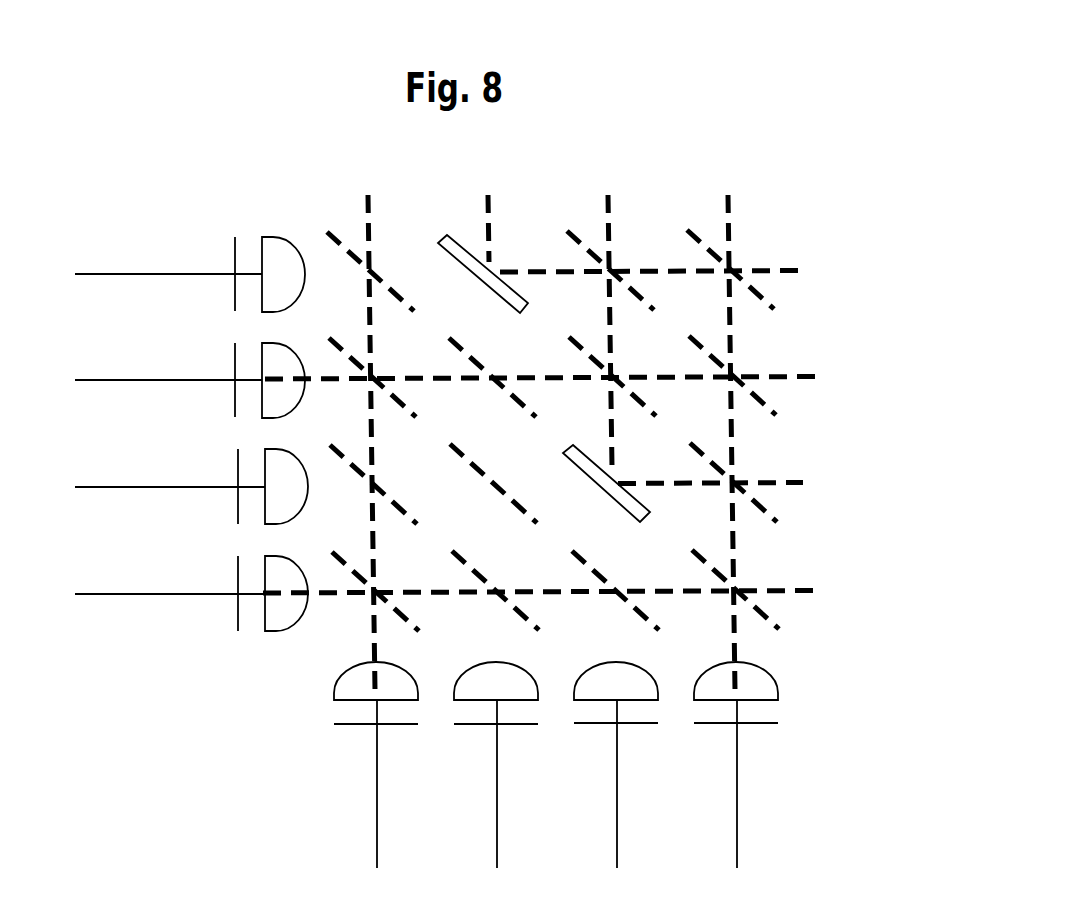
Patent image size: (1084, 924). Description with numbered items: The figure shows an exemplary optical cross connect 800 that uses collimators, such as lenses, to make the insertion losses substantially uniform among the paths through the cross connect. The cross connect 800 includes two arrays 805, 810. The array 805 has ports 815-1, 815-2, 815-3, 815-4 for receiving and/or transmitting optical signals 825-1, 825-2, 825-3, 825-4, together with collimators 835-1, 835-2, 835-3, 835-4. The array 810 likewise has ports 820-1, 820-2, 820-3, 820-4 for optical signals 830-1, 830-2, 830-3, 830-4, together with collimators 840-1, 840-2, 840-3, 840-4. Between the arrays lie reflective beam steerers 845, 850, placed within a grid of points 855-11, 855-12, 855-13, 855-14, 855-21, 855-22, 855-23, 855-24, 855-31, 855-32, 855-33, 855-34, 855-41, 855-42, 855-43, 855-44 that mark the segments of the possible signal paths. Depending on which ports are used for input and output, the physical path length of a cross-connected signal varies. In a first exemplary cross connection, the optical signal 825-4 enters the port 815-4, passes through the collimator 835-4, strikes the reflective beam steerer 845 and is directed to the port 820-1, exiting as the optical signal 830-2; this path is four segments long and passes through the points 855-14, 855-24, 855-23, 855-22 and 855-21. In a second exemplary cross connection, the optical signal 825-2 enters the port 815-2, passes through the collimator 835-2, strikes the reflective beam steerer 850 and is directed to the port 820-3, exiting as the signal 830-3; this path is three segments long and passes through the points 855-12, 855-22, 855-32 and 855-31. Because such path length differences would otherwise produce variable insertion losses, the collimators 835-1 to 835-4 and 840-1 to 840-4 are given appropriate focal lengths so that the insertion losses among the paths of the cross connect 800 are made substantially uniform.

The cross connect 800 is at (724, 95).
The array 805 is at (273, 192).
The array 810 is at (802, 688).
The port 815-1 is at (236, 563).
The port 815-2 is at (236, 456).
The port 815-3 is at (233, 346).
The port 815-4 is at (233, 243).
The optical signal 825-1 is at (93, 593).
The optical signal 825-2 is at (93, 486).
The optical signal 825-3 is at (93, 379).
The optical signal 825-4 is at (93, 273).
The collimator 835-1 is at (303, 576).
The collimator 835-2 is at (303, 469).
The collimator 835-3 is at (303, 361).
The collimator 835-4 is at (303, 252).
The collimator 840-1 is at (400, 668).
The collimator 840-2 is at (523, 668).
The collimator 840-3 is at (643, 668).
The collimator 840-4 is at (763, 668).
The port 820-1 is at (357, 727).
The port 820-2 is at (475, 727).
The port 820-3 is at (597, 727).
The port 820-4 is at (718, 728).
The optical signal 830-1 is at (375, 847).
The optical signal 830-2 is at (496, 847).
The optical signal 830-3 is at (616, 848).
The optical signal 830-4 is at (736, 848).
The reflective beam steerer 845 is at (480, 284).
The reflective beam steerer 850 is at (613, 498).
The point 855-11 is at (418, 574).
The point 855-12 is at (418, 467).
The point 855-13 is at (419, 359).
The point 855-14 is at (418, 243).
The point 855-21 is at (531, 574).
The point 855-22 is at (531, 467).
The point 855-23 is at (533, 359).
The point 855-24 is at (533, 249).
The point 855-31 is at (659, 574).
The point 855-32 is at (658, 468).
The point 855-33 is at (659, 359).
The point 855-34 is at (656, 249).
The point 855-41 is at (773, 574).
The point 855-42 is at (779, 468).
The point 855-43 is at (776, 359).
The point 855-44 is at (774, 249).